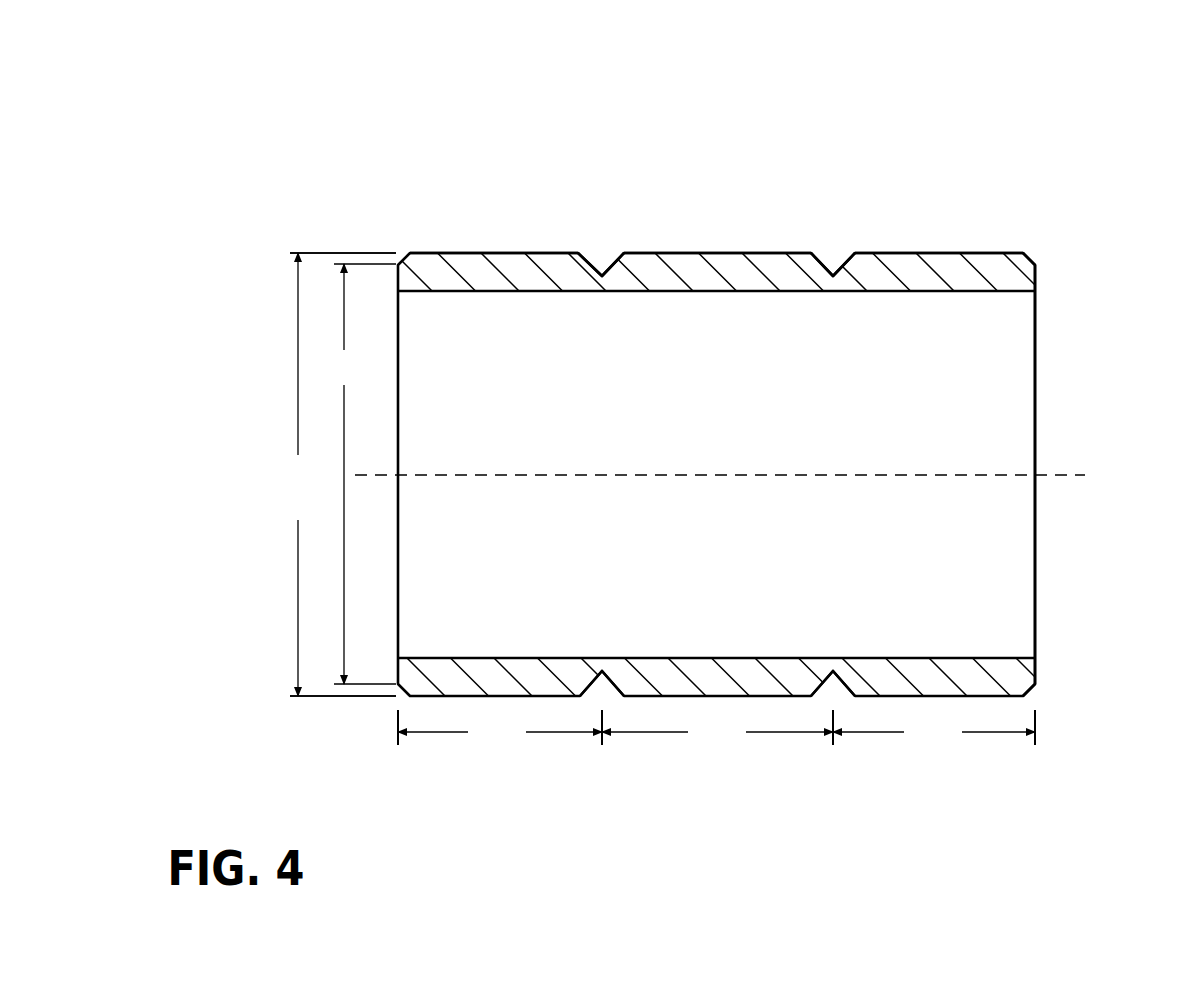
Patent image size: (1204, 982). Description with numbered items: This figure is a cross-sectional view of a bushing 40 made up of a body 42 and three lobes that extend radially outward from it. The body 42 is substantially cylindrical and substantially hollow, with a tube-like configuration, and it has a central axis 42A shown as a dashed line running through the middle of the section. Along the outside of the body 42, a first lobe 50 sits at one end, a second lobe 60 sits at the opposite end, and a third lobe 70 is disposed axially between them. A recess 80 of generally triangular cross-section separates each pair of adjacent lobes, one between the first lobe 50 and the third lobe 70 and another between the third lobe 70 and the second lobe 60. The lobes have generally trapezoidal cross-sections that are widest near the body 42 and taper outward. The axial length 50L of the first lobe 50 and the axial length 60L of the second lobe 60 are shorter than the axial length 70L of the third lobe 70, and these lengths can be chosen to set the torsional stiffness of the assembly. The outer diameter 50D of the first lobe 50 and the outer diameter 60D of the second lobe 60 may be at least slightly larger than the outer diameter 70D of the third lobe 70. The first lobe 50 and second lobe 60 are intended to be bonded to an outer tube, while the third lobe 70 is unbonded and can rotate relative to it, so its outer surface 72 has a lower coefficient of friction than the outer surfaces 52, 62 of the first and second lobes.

The bushing 40 is at (1060, 136).
The body 42 is at (1041, 268).
The central axis 42A is at (1047, 472).
The first lobe 50 is at (513, 265).
The outer surface of the first lobe 52 is at (463, 252).
The second lobe 60 is at (945, 270).
The outer surface of the second lobe 62 is at (895, 250).
The third lobe 70 is at (735, 270).
The outer surface of the third lobe 72 is at (672, 252).
The recess 80 is at (599, 256).
The outer diameter of the first lobe 50D is at (335, 474).
The outer diameter of the second lobe 60D is at (336, 474).
The outer diameter of the third lobe 70D is at (362, 474).
The axial length of the first lobe 50L is at (500, 727).
The axial length of the third lobe 70L is at (717, 727).
The axial length of the second lobe 60L is at (934, 727).